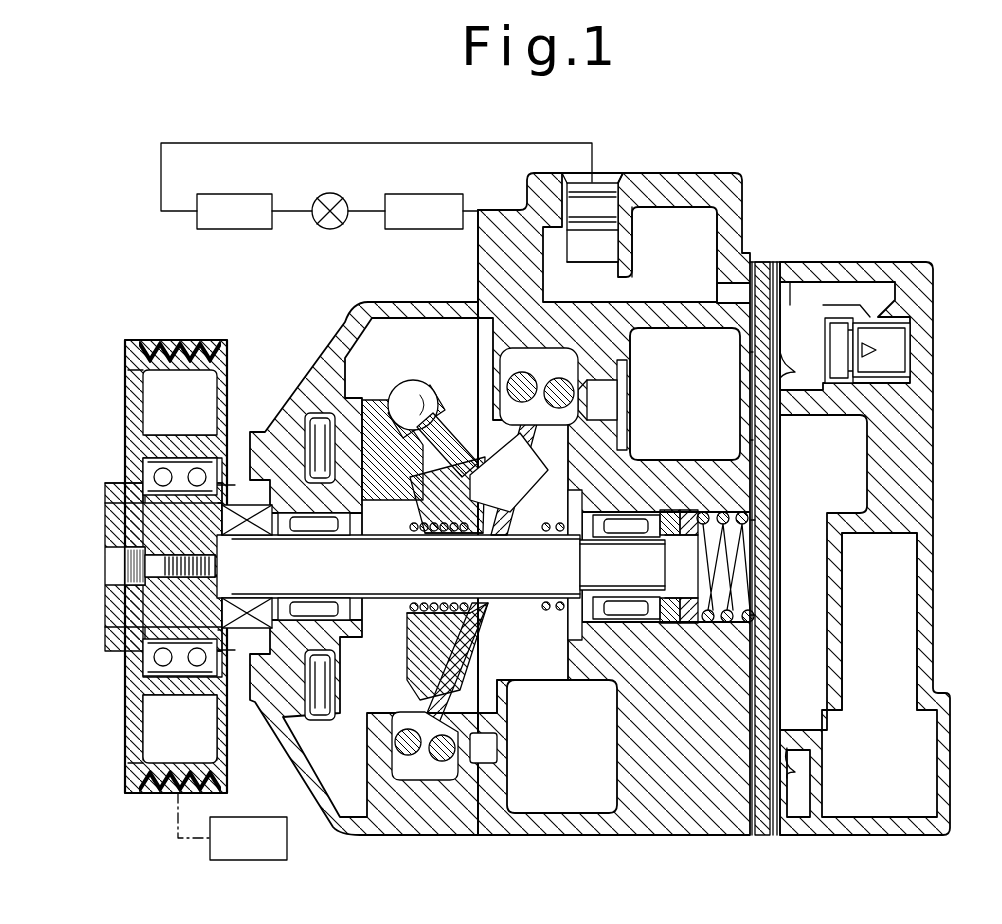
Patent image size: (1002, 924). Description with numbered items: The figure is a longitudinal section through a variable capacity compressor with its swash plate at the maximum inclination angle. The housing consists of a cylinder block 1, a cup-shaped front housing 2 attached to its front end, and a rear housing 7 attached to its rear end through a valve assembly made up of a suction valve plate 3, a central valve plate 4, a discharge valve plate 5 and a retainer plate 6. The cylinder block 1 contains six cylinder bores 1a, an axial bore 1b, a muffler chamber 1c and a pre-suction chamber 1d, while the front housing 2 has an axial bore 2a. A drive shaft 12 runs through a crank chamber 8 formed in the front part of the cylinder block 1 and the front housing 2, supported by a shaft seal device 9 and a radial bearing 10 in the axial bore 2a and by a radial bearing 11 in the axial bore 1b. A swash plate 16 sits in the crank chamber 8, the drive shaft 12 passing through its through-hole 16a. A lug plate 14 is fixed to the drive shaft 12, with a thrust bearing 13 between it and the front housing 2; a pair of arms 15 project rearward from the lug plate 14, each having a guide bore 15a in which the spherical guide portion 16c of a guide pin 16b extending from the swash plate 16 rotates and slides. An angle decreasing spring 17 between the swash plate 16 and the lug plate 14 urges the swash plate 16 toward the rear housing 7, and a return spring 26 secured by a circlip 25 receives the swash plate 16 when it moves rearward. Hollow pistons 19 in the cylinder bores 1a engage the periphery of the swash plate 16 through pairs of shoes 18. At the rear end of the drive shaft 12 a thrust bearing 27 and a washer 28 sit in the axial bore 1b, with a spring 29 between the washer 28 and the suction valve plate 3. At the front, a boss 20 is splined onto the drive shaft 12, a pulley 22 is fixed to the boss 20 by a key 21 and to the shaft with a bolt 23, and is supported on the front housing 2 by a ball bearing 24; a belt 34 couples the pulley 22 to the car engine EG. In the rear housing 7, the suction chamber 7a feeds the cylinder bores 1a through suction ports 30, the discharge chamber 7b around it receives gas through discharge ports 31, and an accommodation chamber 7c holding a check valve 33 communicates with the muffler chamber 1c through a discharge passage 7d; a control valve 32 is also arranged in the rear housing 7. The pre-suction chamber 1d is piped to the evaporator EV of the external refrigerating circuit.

The cylinder block 1 is at (688, 186).
The cylinder bores 1a is at (675, 328).
The axial bore 1b is at (784, 538).
The muffler chamber 1c is at (690, 266).
The pre-suction chamber 1d is at (594, 256).
The front housing 2 is at (343, 347).
The axial bore 2a is at (254, 537).
The suction valve plate 3 is at (752, 260).
The central valve plate 4 is at (765, 260).
The discharge valve plate 5 is at (773, 260).
The retainer plate 6 is at (779, 268).
The rear housing 7 is at (930, 448).
The suction chamber 7a is at (835, 470).
The discharge chamber 7b is at (820, 386).
The accommodation chamber 7c is at (900, 365).
The discharge passage 7d is at (862, 290).
The crank chamber 8 is at (504, 666).
The shaft seal device 9 is at (246, 645).
The radial bearing 10 is at (329, 535).
The radial bearing 11 is at (612, 538).
The drive shaft 12 is at (396, 579).
The thrust bearing 13 is at (306, 440).
The lug plate 14 is at (372, 440).
The arms 15 is at (440, 390).
The guide bore 15a is at (348, 368).
The swash plate 16 is at (412, 662).
The through-hole 16a is at (474, 598).
The guide pins 16b is at (456, 440).
The guide portion 16c is at (405, 383).
The angle decreasing spring 17 is at (421, 534).
The shoes 18 is at (553, 425).
The hollow pistons 19 is at (628, 385).
The boss 20 is at (118, 632).
The key 21 is at (112, 498).
The pulley 22 is at (130, 392).
The bolt 23 is at (124, 566).
The ball bearing 24 is at (150, 468).
The circlip 25 is at (566, 625).
The return spring 26 is at (545, 534).
The thrust bearing 27 is at (668, 628).
The washer 28 is at (690, 628).
The spring 29 is at (760, 602).
The suction ports 30 is at (752, 438).
The discharge ports 31 is at (752, 356).
The control valve 32 is at (898, 762).
The check valve 33 is at (905, 345).
The belt 34 is at (190, 340).
The evaporator EV is at (228, 194).
The engine EG is at (268, 817).